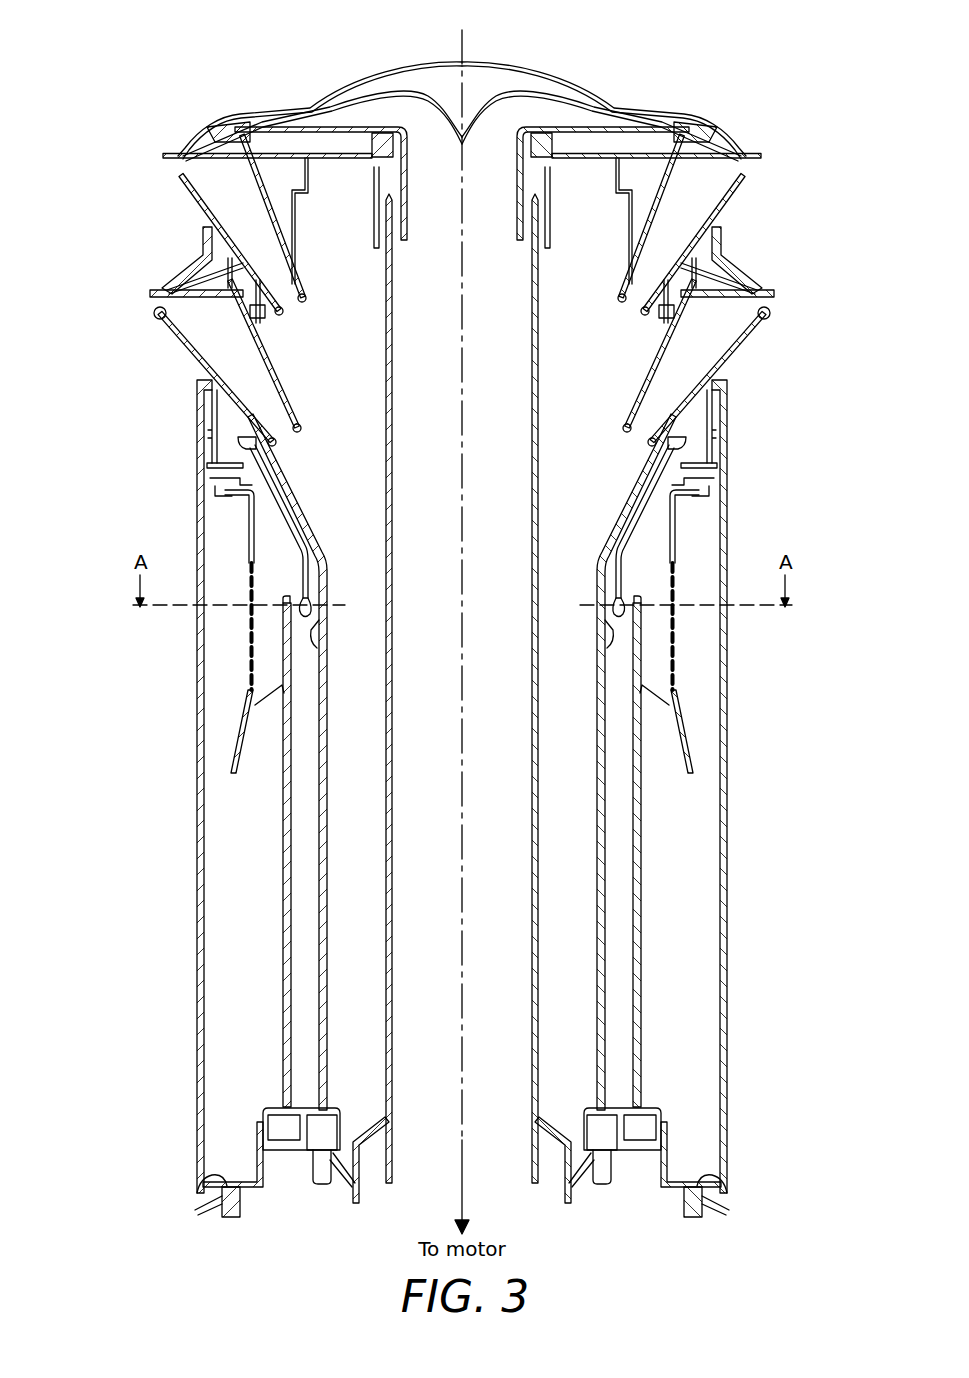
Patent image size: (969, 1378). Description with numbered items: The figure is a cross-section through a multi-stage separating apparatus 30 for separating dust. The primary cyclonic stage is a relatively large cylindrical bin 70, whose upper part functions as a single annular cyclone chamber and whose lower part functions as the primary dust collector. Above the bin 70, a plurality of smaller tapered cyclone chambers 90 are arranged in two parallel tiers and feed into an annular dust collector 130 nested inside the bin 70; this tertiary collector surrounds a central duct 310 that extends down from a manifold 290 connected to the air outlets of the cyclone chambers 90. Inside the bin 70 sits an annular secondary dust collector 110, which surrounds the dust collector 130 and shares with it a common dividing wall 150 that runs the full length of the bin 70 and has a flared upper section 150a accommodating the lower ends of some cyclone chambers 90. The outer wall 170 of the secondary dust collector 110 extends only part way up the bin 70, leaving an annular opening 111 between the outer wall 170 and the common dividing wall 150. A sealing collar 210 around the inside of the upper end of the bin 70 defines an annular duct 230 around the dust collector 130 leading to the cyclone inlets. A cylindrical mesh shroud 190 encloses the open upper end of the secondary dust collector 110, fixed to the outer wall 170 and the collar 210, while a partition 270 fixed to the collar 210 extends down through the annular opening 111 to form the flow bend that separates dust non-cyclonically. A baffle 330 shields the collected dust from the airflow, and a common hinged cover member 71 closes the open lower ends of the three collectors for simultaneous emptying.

The multi-stage separating apparatus 30 is at (211, 84).
The bin 70 is at (727, 735).
The cover member 71 is at (680, 1198).
The cyclone chambers 90 is at (213, 191).
The secondary dust collector 110 is at (300, 898).
The annular opening 111 is at (310, 622).
The dust collector 130 is at (375, 885).
The common dividing wall 150 is at (313, 1072).
The flared upper section 150a is at (275, 526).
The outer wall 170 is at (285, 813).
The mesh shroud 190 is at (252, 665).
The sealing collar 210 is at (212, 443).
The annular duct 230 is at (712, 443).
The partition 270 is at (650, 555).
The manifold 290 is at (510, 100).
The central duct 310 is at (483, 523).
The baffle 330 is at (311, 628).